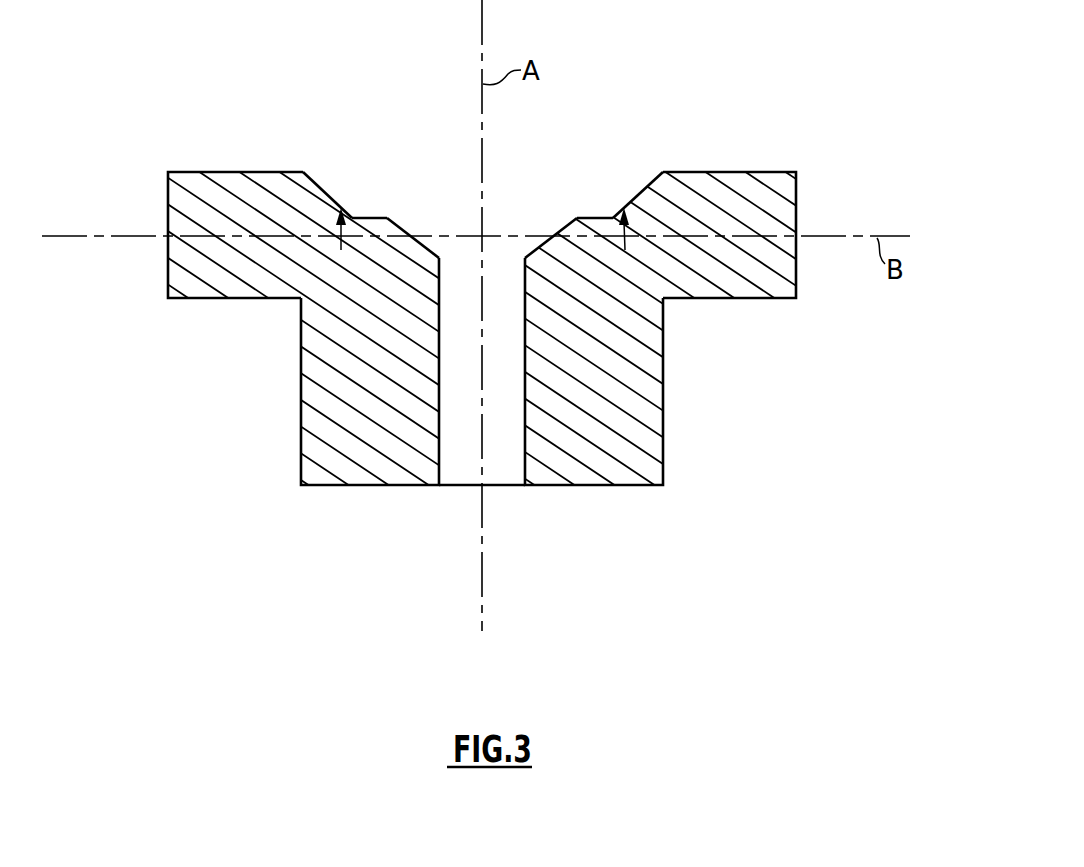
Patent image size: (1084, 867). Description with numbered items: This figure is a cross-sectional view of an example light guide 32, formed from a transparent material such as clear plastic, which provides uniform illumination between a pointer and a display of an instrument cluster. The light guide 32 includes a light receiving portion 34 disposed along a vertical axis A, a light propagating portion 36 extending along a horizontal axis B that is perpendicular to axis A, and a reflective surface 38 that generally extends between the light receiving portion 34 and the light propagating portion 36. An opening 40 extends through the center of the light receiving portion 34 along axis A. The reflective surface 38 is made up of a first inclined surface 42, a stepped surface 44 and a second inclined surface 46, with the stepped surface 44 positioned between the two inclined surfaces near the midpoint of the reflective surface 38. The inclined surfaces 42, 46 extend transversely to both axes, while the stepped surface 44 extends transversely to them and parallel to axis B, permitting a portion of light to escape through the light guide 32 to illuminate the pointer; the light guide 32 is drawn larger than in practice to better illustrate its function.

The light guide 32 is at (482, 331).
The light receiving portion 34 is at (300, 452).
The light propagating portion 36 is at (217, 298).
The reflective surface 38 is at (341, 250).
The opening 40 is at (507, 452).
The first inclined surface 42 is at (420, 253).
The stepped surface 44 is at (372, 218).
The second inclined surface 46 is at (329, 193).